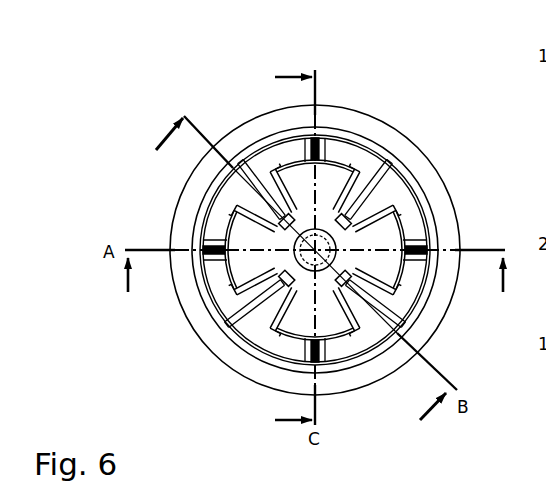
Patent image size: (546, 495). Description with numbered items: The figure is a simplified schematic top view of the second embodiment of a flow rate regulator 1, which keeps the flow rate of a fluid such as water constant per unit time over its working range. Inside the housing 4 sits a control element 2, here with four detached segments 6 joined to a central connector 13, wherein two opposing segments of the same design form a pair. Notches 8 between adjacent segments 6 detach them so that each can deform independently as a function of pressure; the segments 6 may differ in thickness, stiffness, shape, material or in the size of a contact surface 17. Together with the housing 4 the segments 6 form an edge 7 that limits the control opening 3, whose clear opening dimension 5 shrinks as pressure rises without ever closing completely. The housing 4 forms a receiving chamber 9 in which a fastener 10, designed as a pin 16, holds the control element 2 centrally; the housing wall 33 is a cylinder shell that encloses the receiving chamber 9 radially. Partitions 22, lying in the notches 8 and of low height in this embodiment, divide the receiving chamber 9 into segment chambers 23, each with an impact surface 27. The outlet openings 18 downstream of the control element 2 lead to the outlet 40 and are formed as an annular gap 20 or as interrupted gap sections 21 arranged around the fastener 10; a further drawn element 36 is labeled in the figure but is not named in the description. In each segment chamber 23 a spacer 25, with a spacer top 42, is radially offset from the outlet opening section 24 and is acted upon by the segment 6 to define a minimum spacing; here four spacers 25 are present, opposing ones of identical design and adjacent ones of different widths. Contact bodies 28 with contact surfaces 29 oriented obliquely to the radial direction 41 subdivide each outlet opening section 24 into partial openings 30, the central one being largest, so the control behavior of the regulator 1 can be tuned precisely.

The flow rate regulator 1 is at (440, 150).
The control element 2 is at (268, 237).
The control opening 3 is at (182, 189).
The clear opening dimension 5 is at (236, 203).
The housing 4 is at (233, 296).
The segment 6 is at (290, 200).
The edge 7 is at (404, 207).
The notch 8 is at (307, 270).
The receiving chamber 9 is at (260, 154).
The fastener 10 is at (339, 106).
The pin 16 is at (333, 185).
The connector 13 is at (323, 268).
The contact surface 17 is at (318, 232).
The outlet opening 18 is at (216, 342).
The outlet opening section 24 is at (216, 342).
The partial opening 30 is at (262, 300).
The annular gap 20 is at (416, 317).
The gap section 21 is at (398, 313).
The partition 22 is at (385, 170).
The segment chamber 23 is at (271, 165).
The spacer 25 is at (368, 243).
The spacer top 42 is at (311, 136).
The impact surface 27 is at (236, 300).
The contact body 28 is at (382, 347).
The contact surface 29 is at (364, 318).
The circumferential wall 33 is at (182, 222).
The housing 36 is at (364, 186).
The outlet 40 is at (513, 0).
The radial direction 41 is at (298, 300).